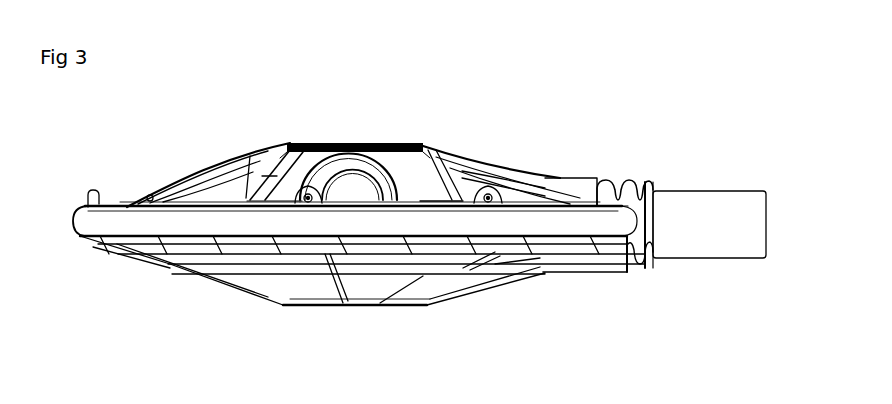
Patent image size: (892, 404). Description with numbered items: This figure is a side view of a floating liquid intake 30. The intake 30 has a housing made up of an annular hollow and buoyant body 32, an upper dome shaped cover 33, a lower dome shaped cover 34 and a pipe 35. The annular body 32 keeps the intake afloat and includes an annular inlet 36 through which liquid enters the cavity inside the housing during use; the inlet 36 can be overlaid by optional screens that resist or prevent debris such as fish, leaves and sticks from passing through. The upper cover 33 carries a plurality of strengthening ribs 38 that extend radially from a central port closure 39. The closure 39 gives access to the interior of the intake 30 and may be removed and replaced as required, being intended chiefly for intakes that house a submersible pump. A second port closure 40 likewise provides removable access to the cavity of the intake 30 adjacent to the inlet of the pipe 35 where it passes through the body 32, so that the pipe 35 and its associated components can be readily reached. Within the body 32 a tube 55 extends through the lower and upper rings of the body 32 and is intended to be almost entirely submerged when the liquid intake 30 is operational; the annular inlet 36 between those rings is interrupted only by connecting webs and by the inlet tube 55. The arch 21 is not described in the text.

The liquid intake 30 is at (598, 103).
The arch member 21 is at (395, 183).
The annular hollow and buoyant body 32 is at (119, 222).
The upper dome shaped cover 33 is at (290, 150).
The lower dome shaped cover 34 is at (253, 287).
The pipe 35 is at (697, 190).
The annular inlet 36 is at (167, 257).
The strengthening ribs 38 is at (247, 187).
The central port closure 39 is at (345, 142).
The second port closure 40 is at (448, 147).
The tube 55 is at (650, 240).